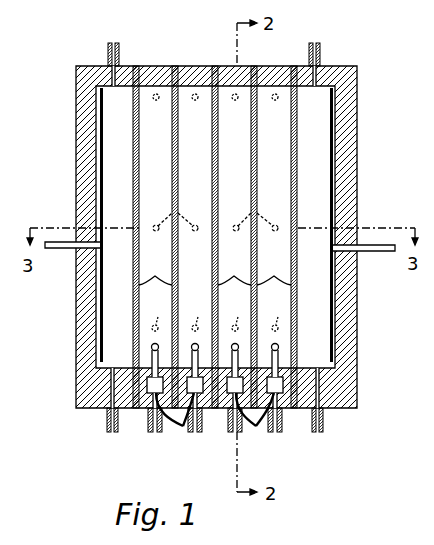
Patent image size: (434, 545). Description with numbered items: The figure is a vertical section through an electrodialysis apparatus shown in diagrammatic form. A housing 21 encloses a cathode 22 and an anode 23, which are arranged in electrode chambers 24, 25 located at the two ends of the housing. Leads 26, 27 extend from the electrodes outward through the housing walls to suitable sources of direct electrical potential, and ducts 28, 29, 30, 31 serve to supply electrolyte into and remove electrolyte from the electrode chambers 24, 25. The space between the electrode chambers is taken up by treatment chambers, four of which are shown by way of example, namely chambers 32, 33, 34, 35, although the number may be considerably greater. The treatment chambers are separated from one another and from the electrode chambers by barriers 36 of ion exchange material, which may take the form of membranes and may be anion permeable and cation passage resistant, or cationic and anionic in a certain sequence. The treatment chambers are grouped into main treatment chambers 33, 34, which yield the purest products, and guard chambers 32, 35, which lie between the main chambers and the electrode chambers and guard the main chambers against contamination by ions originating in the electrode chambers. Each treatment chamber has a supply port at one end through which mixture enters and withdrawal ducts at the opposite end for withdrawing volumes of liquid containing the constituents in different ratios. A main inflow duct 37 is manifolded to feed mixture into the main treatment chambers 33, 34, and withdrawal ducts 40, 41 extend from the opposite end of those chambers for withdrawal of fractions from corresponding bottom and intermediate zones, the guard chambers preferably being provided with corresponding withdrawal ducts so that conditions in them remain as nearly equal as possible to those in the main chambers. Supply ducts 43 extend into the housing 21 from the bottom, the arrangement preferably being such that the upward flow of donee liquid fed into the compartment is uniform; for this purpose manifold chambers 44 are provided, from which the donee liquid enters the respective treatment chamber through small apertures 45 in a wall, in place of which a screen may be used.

The housing 21 is at (348, 392).
The cathode 22 is at (104, 356).
The anode 23 is at (330, 352).
The electrode chamber 24 is at (127, 220).
The electrode chamber 25 is at (320, 218).
The lead 26 is at (370, 252).
The lead 27 is at (63, 250).
The duct 28 is at (107, 428).
The duct 29 is at (108, 50).
The duct 30 is at (324, 425).
The duct 31 is at (320, 52).
The guard chamber 32 is at (165, 165).
The main treatment chamber 33 is at (204, 165).
The main treatment chamber 34 is at (244, 165).
The guard chamber 35 is at (283, 165).
The barrier 36 is at (215, 270).
The main inflow duct 37 is at (277, 350).
The withdrawal duct 40 is at (215, 314).
The withdrawal duct 41 is at (252, 212).
The supply duct 43 is at (283, 447).
The manifold chamber 44 is at (215, 423).
The aperture 45 is at (202, 377).